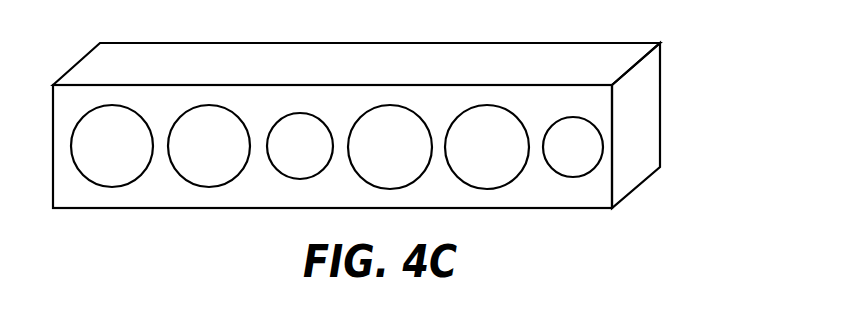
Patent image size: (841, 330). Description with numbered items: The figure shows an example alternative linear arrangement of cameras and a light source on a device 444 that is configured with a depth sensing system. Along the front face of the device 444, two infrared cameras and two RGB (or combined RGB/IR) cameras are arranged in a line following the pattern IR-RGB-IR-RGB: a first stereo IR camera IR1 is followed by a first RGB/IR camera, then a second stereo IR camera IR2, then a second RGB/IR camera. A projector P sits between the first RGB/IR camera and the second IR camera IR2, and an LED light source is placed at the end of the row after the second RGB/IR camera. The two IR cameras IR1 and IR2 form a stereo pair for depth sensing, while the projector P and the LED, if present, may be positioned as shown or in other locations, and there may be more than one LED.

The device 444 is at (637, 151).
The stereo IR camera IR1 is at (95, 157).
The projector P is at (292, 157).
The stereo IR camera IR2 is at (373, 156).
The element LED is at (554, 157).